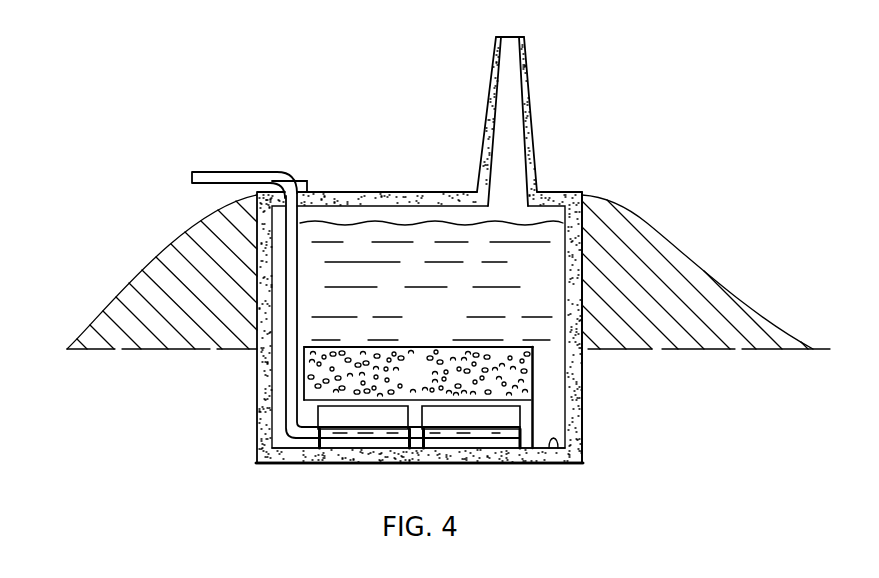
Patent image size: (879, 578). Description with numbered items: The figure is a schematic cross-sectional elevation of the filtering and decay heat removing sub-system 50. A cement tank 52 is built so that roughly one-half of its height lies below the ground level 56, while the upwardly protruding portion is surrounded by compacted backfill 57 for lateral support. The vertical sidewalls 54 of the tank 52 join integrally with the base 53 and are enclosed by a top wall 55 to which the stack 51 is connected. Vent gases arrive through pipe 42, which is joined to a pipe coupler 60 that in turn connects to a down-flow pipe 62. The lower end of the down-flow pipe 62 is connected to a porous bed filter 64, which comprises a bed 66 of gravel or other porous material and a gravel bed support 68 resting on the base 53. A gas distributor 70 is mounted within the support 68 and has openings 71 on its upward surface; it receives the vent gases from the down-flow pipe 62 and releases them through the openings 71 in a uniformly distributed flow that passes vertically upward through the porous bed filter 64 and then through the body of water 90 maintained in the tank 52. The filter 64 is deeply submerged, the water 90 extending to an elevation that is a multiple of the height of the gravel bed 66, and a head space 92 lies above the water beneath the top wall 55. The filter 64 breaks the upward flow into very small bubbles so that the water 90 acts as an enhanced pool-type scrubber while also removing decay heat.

The pipe 42 is at (240, 173).
The filtering and decay heat removing sub-system 50 is at (370, 184).
The stack 51 is at (530, 78).
The cement tank 52 is at (482, 463).
The base 53 is at (560, 462).
The vertical sidewalls 54 is at (583, 397).
The top wall 55 is at (417, 190).
The ground level 56 is at (816, 350).
The compacted backfill 57 is at (697, 262).
The pipe coupler 60 is at (299, 181).
The down-flow pipe 62 is at (291, 360).
The porous bed filter 64 is at (418, 372).
The bed of gravel 66 is at (421, 347).
The gravel bed support 68 is at (322, 418).
The gas distributor 70 is at (317, 464).
The openings 71 is at (389, 440).
The body of water 90 is at (530, 276).
The head space 92 is at (542, 209).